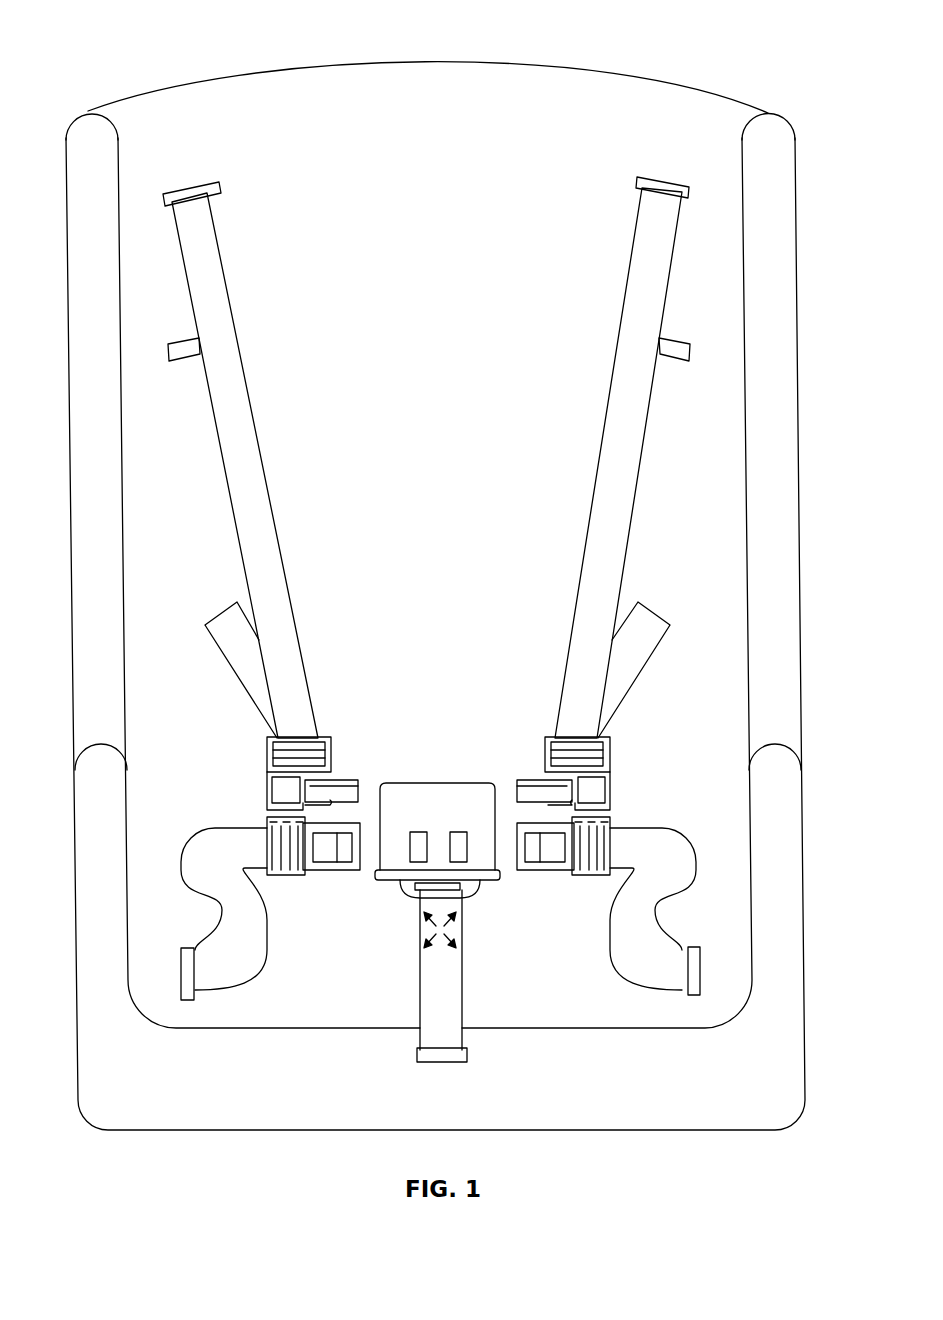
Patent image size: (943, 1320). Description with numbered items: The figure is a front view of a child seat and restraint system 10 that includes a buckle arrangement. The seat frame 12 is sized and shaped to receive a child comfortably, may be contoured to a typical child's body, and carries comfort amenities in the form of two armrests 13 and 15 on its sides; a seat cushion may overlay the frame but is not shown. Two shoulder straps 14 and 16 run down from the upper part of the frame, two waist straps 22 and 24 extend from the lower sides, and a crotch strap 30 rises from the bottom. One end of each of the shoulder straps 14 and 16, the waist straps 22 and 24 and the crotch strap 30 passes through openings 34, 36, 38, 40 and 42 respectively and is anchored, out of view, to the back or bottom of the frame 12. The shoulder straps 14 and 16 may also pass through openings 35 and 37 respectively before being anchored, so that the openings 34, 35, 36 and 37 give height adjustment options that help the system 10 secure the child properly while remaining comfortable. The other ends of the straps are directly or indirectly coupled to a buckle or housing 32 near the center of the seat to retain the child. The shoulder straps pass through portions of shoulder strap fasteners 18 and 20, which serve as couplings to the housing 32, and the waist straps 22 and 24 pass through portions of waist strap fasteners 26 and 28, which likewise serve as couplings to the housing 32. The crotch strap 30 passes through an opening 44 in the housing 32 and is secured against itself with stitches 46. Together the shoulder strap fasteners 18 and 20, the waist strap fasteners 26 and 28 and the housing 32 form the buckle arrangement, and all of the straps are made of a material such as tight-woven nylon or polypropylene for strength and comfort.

The system 10 is at (70, 83).
The seat frame 12 is at (664, 80).
The armrest 13 is at (94, 749).
The shoulder strap 14 is at (252, 408).
The armrest 15 is at (784, 746).
The shoulder strap 16 is at (613, 398).
The shoulder strap fastener 18 is at (333, 753).
The shoulder strap fastener 20 is at (545, 753).
The waist strap 22 is at (250, 975).
The waist strap 24 is at (618, 948).
The waist strap fastener 26 is at (306, 876).
The waist strap fastener 28 is at (567, 876).
The crotch strap 30 is at (463, 978).
The housing 32 is at (416, 783).
The opening 34 is at (200, 184).
The opening 35 is at (188, 362).
The opening 36 is at (652, 178).
The opening 37 is at (684, 362).
The opening 38 is at (185, 980).
The opening 40 is at (694, 994).
The opening 42 is at (440, 1066).
The opening 44 is at (408, 893).
The stitches 46 is at (460, 946).